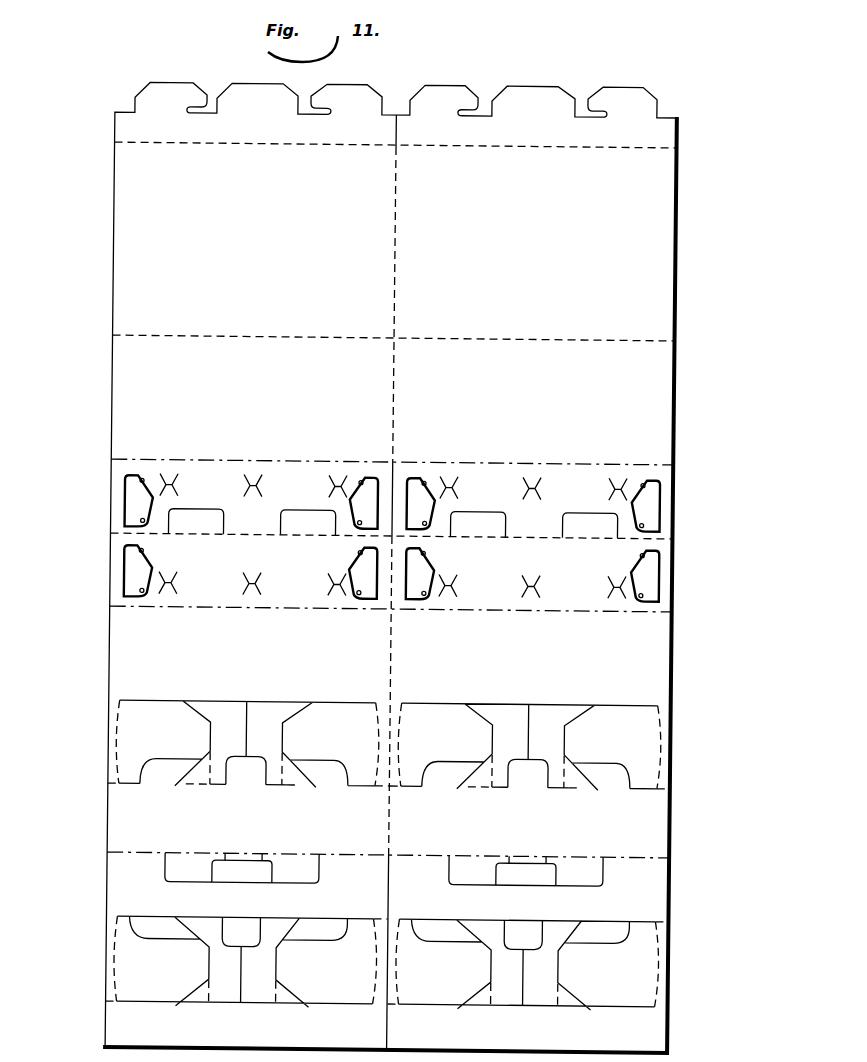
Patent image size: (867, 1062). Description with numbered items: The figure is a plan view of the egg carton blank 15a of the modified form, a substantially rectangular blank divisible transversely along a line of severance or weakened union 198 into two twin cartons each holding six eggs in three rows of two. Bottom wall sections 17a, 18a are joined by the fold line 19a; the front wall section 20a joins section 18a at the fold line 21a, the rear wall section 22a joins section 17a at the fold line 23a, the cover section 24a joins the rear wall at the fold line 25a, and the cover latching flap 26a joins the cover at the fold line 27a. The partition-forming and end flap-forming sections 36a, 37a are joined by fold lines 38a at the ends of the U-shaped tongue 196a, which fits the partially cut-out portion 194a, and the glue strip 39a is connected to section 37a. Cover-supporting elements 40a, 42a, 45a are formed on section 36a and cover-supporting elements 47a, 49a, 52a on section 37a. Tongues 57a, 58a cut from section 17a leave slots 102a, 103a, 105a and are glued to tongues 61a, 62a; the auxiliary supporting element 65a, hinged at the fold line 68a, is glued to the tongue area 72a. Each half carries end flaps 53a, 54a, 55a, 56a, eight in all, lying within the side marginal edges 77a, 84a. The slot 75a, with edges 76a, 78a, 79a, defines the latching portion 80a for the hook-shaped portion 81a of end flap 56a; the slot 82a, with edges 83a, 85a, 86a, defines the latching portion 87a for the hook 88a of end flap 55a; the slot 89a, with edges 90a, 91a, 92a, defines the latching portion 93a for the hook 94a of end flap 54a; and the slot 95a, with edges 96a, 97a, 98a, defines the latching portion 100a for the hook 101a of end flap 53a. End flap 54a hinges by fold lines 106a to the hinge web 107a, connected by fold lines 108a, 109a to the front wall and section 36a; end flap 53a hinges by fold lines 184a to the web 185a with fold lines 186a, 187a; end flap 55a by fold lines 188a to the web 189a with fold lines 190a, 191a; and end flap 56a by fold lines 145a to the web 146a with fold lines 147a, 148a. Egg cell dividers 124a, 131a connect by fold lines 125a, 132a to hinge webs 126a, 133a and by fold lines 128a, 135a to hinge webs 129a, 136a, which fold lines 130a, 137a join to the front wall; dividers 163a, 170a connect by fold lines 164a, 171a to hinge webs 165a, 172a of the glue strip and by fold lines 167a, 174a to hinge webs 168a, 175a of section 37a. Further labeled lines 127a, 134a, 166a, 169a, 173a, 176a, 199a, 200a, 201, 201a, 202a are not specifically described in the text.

The carton blank 15a is at (676, 429).
The panel 17a is at (565, 485).
The panel 18a is at (392, 572).
The fold line 19a is at (659, 532).
The panel 20a is at (665, 650).
The fold line 21a is at (660, 606).
The panel 22a is at (653, 392).
The fold line 23a is at (659, 462).
The panel 24a is at (647, 269).
The fold line 25a is at (652, 337).
The top flap 26a is at (658, 130).
The fold line 27a is at (648, 147).
The panel 36a is at (652, 817).
The panel 37a is at (650, 894).
The fold line 38a is at (660, 866).
The bottom edge 39a is at (655, 1039).
The tab 40a is at (690, 835).
The tab 42a is at (387, 772).
The tab 45a is at (457, 777).
The tab 47a is at (305, 933).
The tab 49a is at (382, 933).
The tab 52a is at (455, 934).
The panel 53a is at (388, 745).
The panel 54a is at (389, 744).
The panel 55a is at (386, 963).
The panel 56a is at (387, 961).
The slot 57a is at (336, 523).
The slot 58a is at (448, 524).
The slot 61a is at (384, 870).
The slot 62a is at (435, 874).
The slot 65a is at (384, 875).
The fold line 68a is at (252, 850).
The bridge 72a is at (394, 525).
The hook 75a is at (364, 479).
The hook edge 76a is at (694, 505).
The fold line 77a is at (673, 362).
The hook edge 78a is at (657, 522).
The hook 79a is at (356, 481).
The hook corner 80a is at (693, 553).
The panel portion 81a is at (446, 963).
The hook 82a is at (124, 482).
The hook edge 83a is at (124, 506).
The side edge 84a is at (109, 409).
The hook 85a is at (429, 484).
The hook edge 86a is at (127, 519).
The hook corner 87a is at (408, 534).
The panel portion 88a is at (319, 961).
The hook 89a is at (364, 599).
The hook edge 90a is at (357, 592).
The hook edge 91a is at (351, 567).
The hook 92a is at (349, 554).
The hook corner 93a is at (635, 553).
The panel portion 94a is at (450, 746).
The hook edge 95a is at (124, 594).
The hook 96a is at (124, 584).
The hook edge 97a is at (149, 562).
The hook 98a is at (127, 556).
The hook corner 100a is at (410, 548).
The edge 101a is at (204, 762).
The cut 102a is at (177, 512).
The cut 103a is at (281, 514).
The cut 105a is at (589, 504).
The edge 106a is at (374, 761).
The edge 107a is at (371, 718).
The fold line 108a is at (371, 703).
The fold line 109a is at (364, 802).
The stem portion 124a is at (406, 731).
The edge 125a is at (275, 790).
The edge 126a is at (299, 805).
The edge 127a is at (296, 795).
The edge 128a is at (291, 713).
The edge 129a is at (303, 700).
The edge 130a is at (311, 703).
The stem portion 131a is at (371, 728).
The edge 132a is at (196, 792).
The edge 133a is at (178, 792).
The edge 134a is at (191, 792).
The edge 135a is at (227, 702).
The edge 136a is at (198, 703).
The edge 137a is at (190, 703).
The edge 145a is at (690, 979).
The edge 146a is at (690, 947).
The fold line 147a is at (380, 922).
The fold line 148a is at (372, 1020).
The stem portion 163a is at (403, 982).
The edge 164a is at (401, 1014).
The edge 165a is at (291, 1012).
The edge 166a is at (306, 1012).
The edge 167a is at (260, 919).
The edge 168a is at (297, 921).
The edge 169a is at (590, 908).
The stem portion 170a is at (367, 985).
The edge 171a is at (209, 1010).
The edge 172a is at (191, 1012).
The edge 173a is at (176, 1009).
The edge 174a is at (371, 911).
The edge 175a is at (193, 919).
The edge 176a is at (180, 918).
The edge 184a is at (109, 759).
The edge 185a is at (109, 732).
The edge 186a is at (109, 794).
The edge 187a is at (121, 703).
The edge 188a is at (111, 949).
The edge 189a is at (111, 974).
The edge 190a is at (112, 1012).
The edge 191a is at (110, 909).
The edge 194a is at (322, 876).
The slot end 196a is at (575, 866).
The center fold line 198 is at (392, 292).
The hook edge 199a is at (378, 478).
The hook edge 200a is at (660, 583).
The hook edge 201 is at (117, 496).
The hook edge 201a is at (402, 480).
The hook edge 202a is at (115, 576).